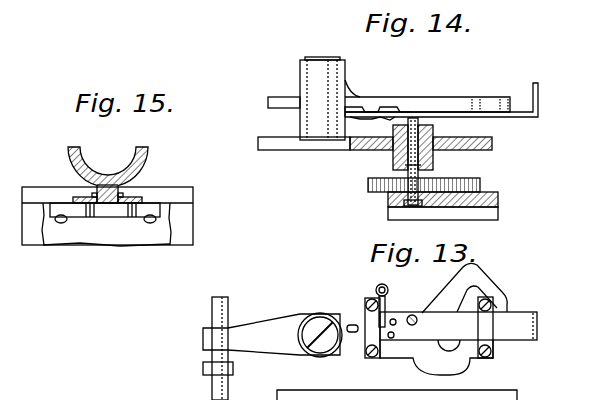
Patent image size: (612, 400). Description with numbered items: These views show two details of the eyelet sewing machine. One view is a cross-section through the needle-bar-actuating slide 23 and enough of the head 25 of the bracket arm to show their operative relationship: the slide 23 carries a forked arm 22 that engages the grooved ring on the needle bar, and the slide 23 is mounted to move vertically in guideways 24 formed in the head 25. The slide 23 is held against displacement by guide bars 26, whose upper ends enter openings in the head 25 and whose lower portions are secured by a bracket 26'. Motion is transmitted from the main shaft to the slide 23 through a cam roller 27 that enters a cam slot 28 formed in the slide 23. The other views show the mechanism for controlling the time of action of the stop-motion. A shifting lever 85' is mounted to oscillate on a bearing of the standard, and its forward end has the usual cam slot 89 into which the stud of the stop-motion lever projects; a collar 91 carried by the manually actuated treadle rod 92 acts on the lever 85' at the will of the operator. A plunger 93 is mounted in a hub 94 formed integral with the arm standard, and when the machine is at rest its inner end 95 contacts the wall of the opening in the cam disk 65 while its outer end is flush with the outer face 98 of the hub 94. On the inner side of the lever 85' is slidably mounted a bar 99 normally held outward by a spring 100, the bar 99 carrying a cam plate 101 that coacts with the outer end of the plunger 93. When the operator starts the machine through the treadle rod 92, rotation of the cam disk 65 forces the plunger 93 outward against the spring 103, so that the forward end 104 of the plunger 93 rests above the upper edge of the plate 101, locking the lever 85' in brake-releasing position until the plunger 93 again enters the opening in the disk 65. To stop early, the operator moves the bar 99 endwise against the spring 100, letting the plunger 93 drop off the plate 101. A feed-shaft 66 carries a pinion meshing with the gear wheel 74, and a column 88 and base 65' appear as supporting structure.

In FIG. 15, the forked arm 22 is at (146, 154).
In FIG. 15, the needle-bar-actuating slide 23 is at (65, 215).
In FIG. 15, the guideways 24 is at (120, 184).
In FIG. 15, the head of the bracket arm 25 is at (193, 224).
In FIG. 15, the guide bars 26 is at (114, 177).
In FIG. 15, the bracket 26' is at (184, 182).
In FIG. 15, the cam roller 27 is at (148, 217).
In FIG. 15, the cam slot 28 is at (107, 213).
In FIG. 14, the cam disk 65 is at (456, 214).
In FIG. 13, the arm 65' is at (271, 329).
In FIG. 14, the feed-shaft 66 is at (347, 82).
In FIG. 13, the feed-shaft 66 is at (320, 325).
In FIG. 14, the gear wheel 74 is at (481, 185).
In FIG. 14, the shifting lever 85' is at (486, 87).
In FIG. 14, the column 88 is at (322, 57).
In FIG. 13, the cam slot 89 is at (470, 295).
In FIG. 13, the collar 91 is at (234, 369).
In FIG. 13, the treadle rod 92 is at (212, 384).
In FIG. 14, the plunger 93 is at (430, 172).
In FIG. 13, the plunger 93 is at (417, 321).
In FIG. 14, the hub 94 is at (394, 158).
In FIG. 14, the inner end of the plunger 95 is at (411, 207).
In FIG. 14, the outer face of the hub 98 is at (424, 126).
In FIG. 14, the bar 99 is at (528, 118).
In FIG. 13, the bar 99 is at (533, 327).
In FIG. 13, the spring 100 is at (379, 286).
In FIG. 14, the cam plate 101 is at (396, 126).
In FIG. 13, the cam plate 101 is at (397, 330).
In FIG. 14, the spring 103 is at (400, 168).
In FIG. 14, the forward end of the plunger 104 is at (411, 124).